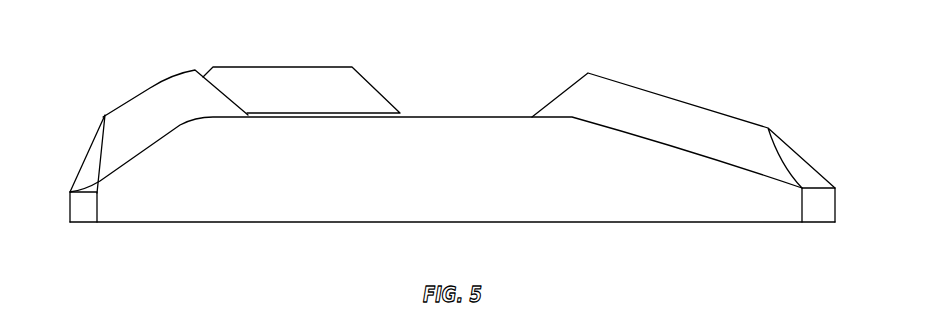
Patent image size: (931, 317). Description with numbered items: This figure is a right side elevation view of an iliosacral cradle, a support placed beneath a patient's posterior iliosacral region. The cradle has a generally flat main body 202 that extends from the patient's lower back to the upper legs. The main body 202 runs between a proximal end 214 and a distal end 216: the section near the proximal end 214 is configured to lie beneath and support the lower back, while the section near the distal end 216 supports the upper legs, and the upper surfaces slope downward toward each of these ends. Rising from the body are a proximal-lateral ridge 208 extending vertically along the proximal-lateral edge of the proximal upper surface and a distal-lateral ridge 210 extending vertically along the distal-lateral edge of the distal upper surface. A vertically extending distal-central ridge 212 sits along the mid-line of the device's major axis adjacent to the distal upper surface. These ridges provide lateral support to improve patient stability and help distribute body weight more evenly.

The main body 202 is at (470, 182).
The proximal-lateral ridge 208 is at (633, 110).
The distal-lateral ridge 210 is at (152, 105).
The distal-central ridge 212 is at (332, 87).
The proximal end 214 is at (835, 202).
The distal end 216 is at (70, 201).